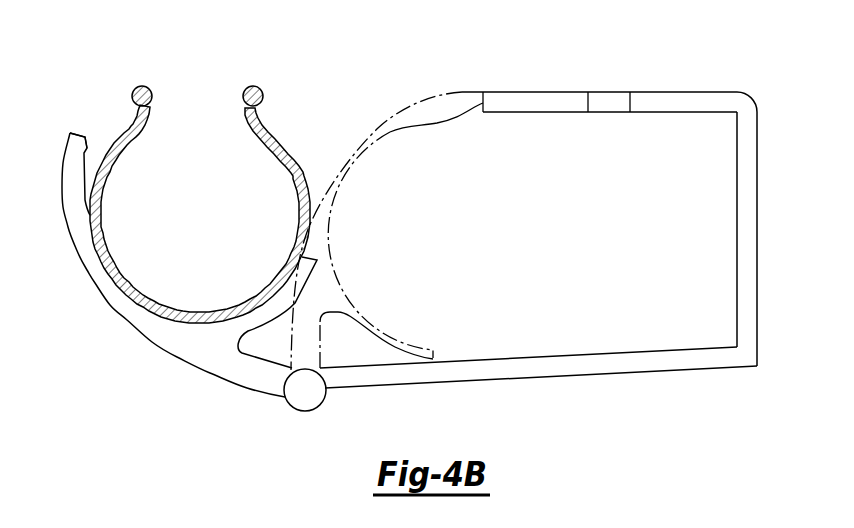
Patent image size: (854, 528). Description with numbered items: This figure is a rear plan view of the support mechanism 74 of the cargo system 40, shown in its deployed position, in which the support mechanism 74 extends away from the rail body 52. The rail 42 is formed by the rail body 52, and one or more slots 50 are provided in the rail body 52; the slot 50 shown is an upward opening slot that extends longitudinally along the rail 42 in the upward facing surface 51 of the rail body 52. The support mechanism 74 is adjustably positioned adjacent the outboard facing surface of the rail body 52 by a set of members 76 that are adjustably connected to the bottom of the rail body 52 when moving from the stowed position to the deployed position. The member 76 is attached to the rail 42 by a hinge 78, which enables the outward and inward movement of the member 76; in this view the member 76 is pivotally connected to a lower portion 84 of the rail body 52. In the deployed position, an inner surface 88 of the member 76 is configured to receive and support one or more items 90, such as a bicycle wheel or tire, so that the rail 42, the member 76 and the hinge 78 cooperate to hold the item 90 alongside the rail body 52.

The cargo system 40 is at (762, 92).
The first rail 42 is at (760, 328).
The slot 50 is at (612, 101).
The upward facing surface 51 is at (688, 92).
The rail body 52 is at (748, 205).
The support mechanism 74 is at (66, 202).
The member 76 is at (135, 318).
The hinge 78 is at (306, 411).
The lower portion 84 is at (690, 357).
The inner surface 88 is at (87, 152).
The item 90 is at (165, 113).